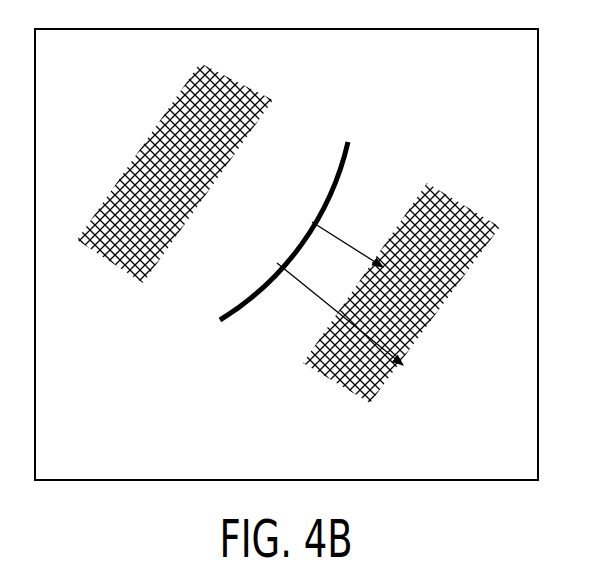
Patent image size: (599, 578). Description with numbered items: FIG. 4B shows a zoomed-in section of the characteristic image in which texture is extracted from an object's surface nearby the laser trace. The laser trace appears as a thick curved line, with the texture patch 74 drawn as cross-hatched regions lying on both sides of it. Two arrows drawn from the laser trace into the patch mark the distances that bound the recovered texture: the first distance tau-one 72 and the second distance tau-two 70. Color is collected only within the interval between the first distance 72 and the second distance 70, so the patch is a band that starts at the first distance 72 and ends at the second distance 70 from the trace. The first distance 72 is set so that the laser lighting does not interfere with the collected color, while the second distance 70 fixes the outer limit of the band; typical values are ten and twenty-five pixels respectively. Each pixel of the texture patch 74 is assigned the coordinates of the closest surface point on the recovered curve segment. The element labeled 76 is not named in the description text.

The distance τ2 70 is at (323, 307).
The distance τ1 72 is at (363, 260).
The texture patch 74 is at (127, 262).
The curved wall 76 is at (217, 323).